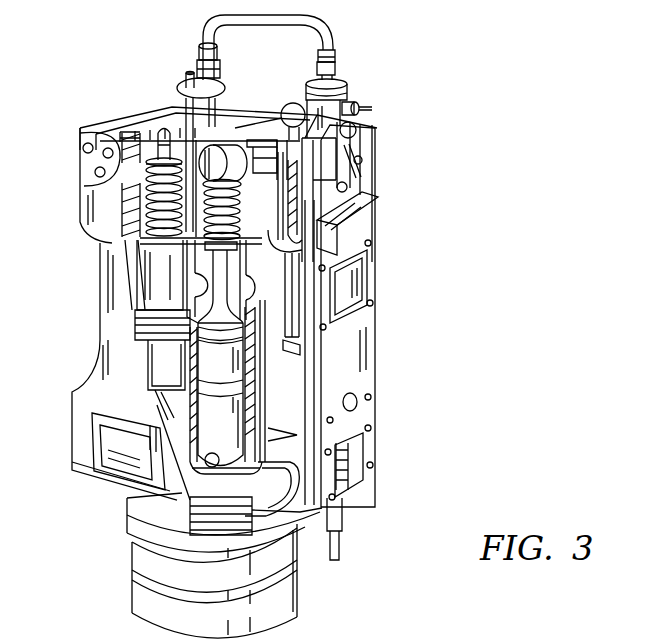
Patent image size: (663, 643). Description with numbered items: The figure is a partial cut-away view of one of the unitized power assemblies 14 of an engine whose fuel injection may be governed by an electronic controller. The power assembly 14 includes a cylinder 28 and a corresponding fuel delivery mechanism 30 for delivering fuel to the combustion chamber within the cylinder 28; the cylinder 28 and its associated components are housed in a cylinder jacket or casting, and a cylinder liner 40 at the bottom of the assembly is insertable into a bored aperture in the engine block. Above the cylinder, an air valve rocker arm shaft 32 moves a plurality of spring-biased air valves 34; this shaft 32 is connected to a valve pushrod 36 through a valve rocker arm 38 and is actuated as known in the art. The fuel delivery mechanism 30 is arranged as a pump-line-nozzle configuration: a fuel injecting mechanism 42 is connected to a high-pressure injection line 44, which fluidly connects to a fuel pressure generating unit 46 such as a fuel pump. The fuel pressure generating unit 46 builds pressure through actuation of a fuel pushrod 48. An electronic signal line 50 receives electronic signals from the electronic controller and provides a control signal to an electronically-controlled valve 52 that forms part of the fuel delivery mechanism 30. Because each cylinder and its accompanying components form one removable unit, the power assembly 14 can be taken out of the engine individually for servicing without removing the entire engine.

The power assembly 14 is at (79, 64).
The cylinder 28 is at (212, 467).
The fuel delivery mechanism 30 is at (420, 198).
The air valve rocker arm shaft 32 is at (208, 165).
The spring-biased air valves 34 is at (226, 215).
The valve pushrod 36 is at (288, 307).
The valve rocker arm 38 is at (255, 150).
The cylinder liner 40 is at (302, 618).
The fuel injecting mechanism 42 is at (208, 80).
The high-pressure injection line 44 is at (274, 26).
The fuel pressure generating unit 46 is at (341, 95).
The fuel pushrod 48 is at (343, 543).
The electronic signal line 50 is at (372, 112).
The electronically-controlled valve 52 is at (356, 101).